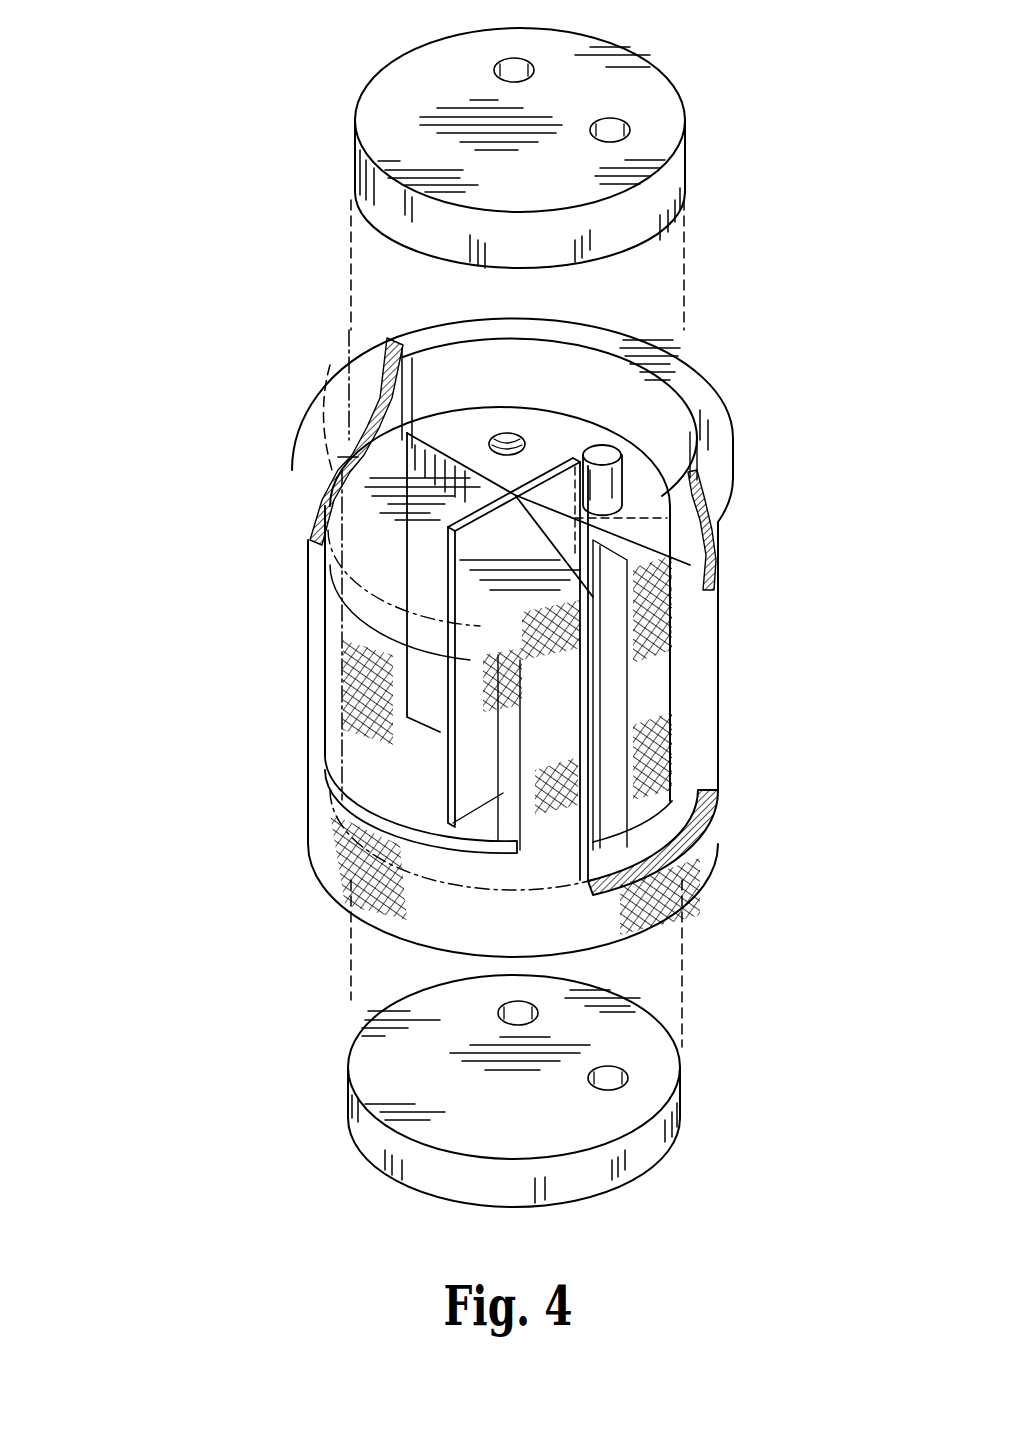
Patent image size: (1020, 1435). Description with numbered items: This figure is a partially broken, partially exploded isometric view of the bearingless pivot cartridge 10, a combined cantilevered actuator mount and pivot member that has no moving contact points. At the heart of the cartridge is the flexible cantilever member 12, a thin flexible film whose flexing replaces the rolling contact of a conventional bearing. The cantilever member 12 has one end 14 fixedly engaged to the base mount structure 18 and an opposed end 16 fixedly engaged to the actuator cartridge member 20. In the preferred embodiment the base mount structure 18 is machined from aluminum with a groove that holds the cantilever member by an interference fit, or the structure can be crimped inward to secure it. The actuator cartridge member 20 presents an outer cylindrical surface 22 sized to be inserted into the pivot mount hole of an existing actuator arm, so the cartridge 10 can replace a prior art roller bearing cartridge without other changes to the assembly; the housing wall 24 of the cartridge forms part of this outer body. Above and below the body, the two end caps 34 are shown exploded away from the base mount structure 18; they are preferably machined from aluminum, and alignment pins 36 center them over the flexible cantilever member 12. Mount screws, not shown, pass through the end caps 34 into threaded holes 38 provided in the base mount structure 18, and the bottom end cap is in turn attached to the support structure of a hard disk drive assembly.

The bearingless pivot cartridge 10 is at (238, 333).
The flexible cantilever member 12 is at (573, 580).
The one end 14 is at (673, 555).
The opposed end 16 is at (480, 630).
The base mount structure 18 is at (578, 443).
The actuator cartridge member 20 is at (357, 483).
The outer cylindrical surface 22 is at (580, 923).
The housing wall 24 is at (323, 839).
The end caps 34 is at (642, 97).
The alignment pins 36 is at (620, 480).
The threaded holes 38 is at (503, 433).